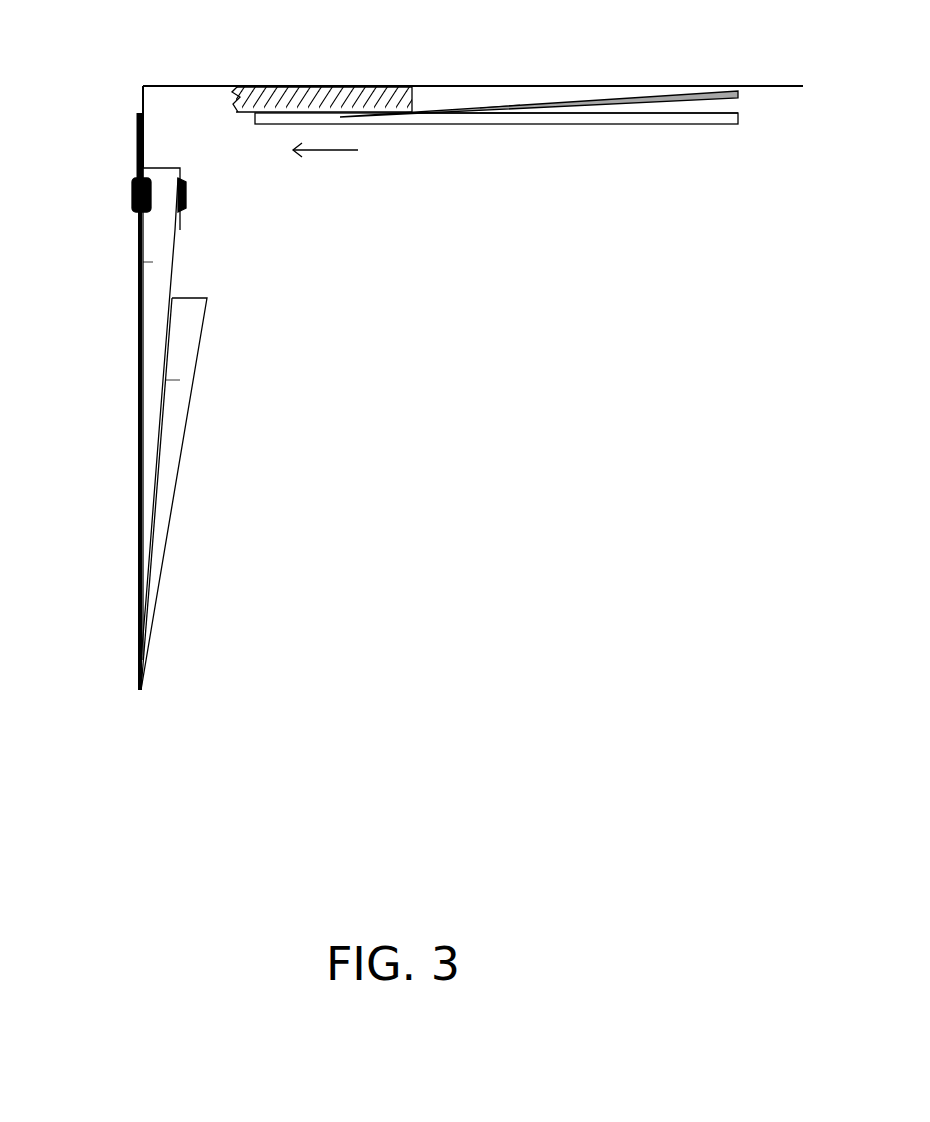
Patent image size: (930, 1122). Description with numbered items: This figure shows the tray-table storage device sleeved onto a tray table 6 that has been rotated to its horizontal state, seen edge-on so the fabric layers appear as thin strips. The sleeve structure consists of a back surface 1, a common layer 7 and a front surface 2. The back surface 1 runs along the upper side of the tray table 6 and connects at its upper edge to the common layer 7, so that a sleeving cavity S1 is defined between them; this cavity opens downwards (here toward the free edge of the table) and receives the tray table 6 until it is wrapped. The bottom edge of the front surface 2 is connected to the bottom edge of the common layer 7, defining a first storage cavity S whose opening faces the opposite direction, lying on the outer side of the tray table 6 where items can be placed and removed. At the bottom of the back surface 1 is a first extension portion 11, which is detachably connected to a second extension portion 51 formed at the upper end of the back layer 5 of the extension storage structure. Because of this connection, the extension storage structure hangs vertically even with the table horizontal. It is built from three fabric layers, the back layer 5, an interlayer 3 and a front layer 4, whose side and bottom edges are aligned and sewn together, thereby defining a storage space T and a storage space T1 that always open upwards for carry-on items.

The back surface 1 is at (473, 51).
The first extension portion 11 is at (91, 99).
The tray table 6 is at (322, 56).
The front surface 2 is at (496, 185).
The common layer 7 is at (539, 160).
The sleeving cavity S1 is at (495, 100).
The first storage cavity S is at (500, 113).
The second extension portion 51 is at (115, 162).
The back layer 5 is at (96, 450).
The storage space T is at (153, 262).
The interlayer 3 is at (204, 414).
The storage space T1 is at (175, 380).
The front layer 4 is at (206, 494).